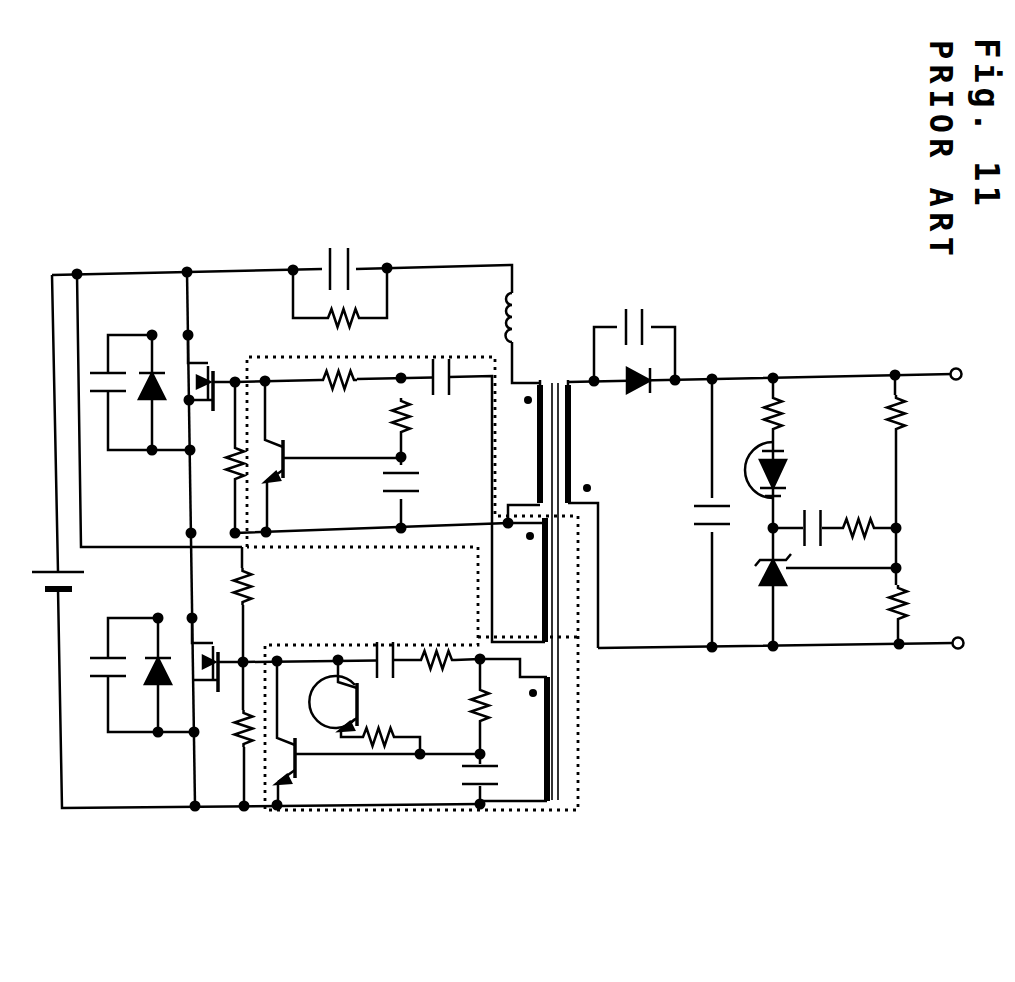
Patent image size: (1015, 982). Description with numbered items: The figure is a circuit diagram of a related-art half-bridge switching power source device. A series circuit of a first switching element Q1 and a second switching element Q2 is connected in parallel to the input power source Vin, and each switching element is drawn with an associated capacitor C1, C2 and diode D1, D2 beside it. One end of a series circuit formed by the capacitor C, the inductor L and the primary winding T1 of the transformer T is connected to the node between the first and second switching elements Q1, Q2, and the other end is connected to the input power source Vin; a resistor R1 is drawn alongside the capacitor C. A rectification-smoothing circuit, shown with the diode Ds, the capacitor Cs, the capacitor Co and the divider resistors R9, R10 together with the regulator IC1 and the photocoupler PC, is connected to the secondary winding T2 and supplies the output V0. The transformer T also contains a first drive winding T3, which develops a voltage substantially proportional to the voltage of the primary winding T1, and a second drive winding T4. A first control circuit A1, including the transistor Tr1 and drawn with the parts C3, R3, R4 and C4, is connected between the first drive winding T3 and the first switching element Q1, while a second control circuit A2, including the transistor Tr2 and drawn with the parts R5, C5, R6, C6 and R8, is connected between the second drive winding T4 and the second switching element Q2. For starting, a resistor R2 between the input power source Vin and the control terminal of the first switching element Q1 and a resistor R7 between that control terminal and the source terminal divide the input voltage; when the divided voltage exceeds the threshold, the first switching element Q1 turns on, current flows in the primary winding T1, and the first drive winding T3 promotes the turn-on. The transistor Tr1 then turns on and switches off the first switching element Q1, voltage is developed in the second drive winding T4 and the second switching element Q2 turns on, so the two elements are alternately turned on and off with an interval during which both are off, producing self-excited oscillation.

The input power source Vin is at (44, 566).
The capacitor C2 is at (137, 380).
The diode D2 is at (149, 377).
The second switching element Q2 is at (212, 357).
The capacitor C is at (327, 258).
The resistor R1 is at (340, 297).
The second control circuit A2 is at (490, 355).
The inductor L is at (526, 317).
The transformer T is at (552, 577).
The primary winding T1 is at (508, 457).
The secondary winding T2 is at (596, 457).
The first drive winding T3 is at (522, 714).
The second drive winding T4 is at (520, 560).
The snubber capacitor Cs is at (630, 316).
The rectifier diode Ds is at (640, 395).
The output voltage V0 is at (953, 493).
The resistor R5 is at (344, 368).
The capacitor C5 is at (431, 371).
The resistor R6 is at (418, 416).
The capacitor C6 is at (415, 486).
The resistor R8 is at (221, 475).
The transistor Tr2 is at (333, 472).
The resistor R2 is at (261, 586).
The capacitor C1 is at (142, 661).
The diode D1 is at (157, 661).
The first switching element Q1 is at (209, 640).
The resistor R7 is at (227, 746).
The capacitor C3 is at (379, 643).
The resistor R3 is at (436, 639).
The resistor R4 is at (457, 705).
The capacitor C4 is at (496, 777).
The transistor Tr1 is at (303, 770).
The photocoupler PC is at (532, 570).
The first control circuit A1 is at (458, 816).
The output smoothing capacitor Co is at (693, 518).
The resistor R9 is at (874, 413).
The resistor R10 is at (870, 603).
The shunt regulator IC1 is at (804, 563).